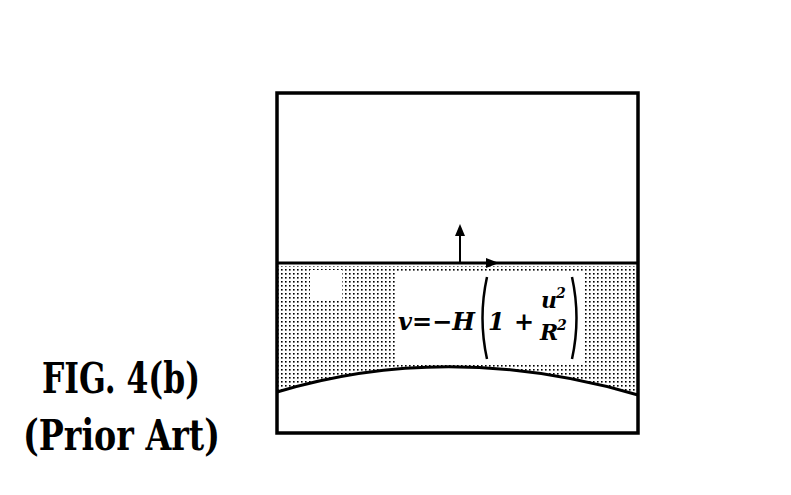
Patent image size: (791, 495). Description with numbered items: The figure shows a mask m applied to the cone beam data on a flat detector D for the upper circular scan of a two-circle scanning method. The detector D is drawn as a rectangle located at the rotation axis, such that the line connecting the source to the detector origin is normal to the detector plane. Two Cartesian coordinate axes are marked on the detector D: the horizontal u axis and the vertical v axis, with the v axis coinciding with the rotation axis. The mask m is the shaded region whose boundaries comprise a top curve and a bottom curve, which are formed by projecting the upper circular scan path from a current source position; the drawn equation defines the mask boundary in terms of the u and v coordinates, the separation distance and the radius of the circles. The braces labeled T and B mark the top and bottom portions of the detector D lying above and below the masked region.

The detector D is at (388, 93).
The top (transparent) layer T is at (645, 95).
The bottom (substrate) layer B is at (645, 266).
The mask m is at (340, 298).
The u coordinate axis u is at (484, 253).
The v coordinate axis v is at (452, 236).